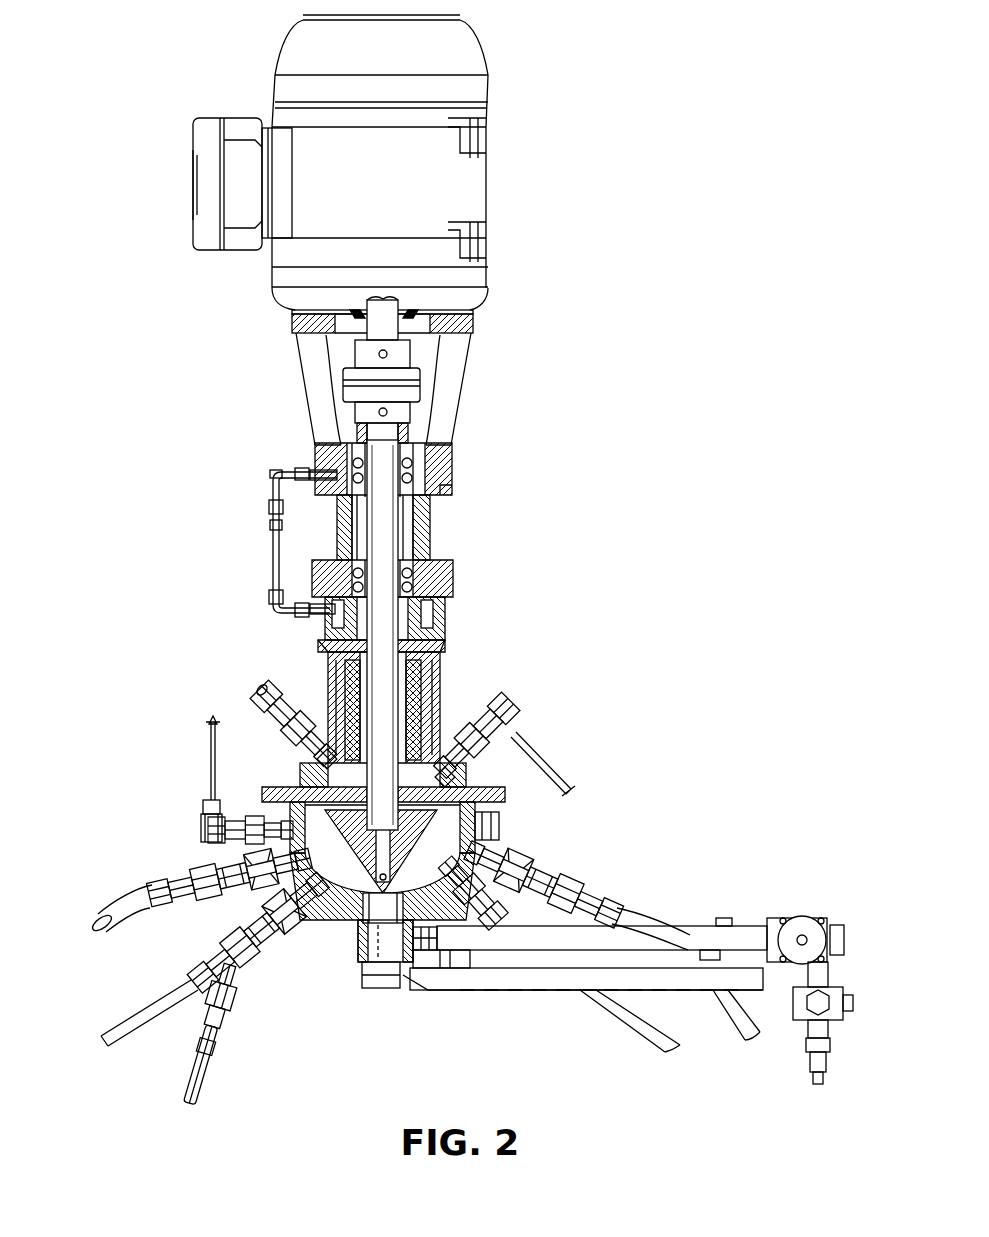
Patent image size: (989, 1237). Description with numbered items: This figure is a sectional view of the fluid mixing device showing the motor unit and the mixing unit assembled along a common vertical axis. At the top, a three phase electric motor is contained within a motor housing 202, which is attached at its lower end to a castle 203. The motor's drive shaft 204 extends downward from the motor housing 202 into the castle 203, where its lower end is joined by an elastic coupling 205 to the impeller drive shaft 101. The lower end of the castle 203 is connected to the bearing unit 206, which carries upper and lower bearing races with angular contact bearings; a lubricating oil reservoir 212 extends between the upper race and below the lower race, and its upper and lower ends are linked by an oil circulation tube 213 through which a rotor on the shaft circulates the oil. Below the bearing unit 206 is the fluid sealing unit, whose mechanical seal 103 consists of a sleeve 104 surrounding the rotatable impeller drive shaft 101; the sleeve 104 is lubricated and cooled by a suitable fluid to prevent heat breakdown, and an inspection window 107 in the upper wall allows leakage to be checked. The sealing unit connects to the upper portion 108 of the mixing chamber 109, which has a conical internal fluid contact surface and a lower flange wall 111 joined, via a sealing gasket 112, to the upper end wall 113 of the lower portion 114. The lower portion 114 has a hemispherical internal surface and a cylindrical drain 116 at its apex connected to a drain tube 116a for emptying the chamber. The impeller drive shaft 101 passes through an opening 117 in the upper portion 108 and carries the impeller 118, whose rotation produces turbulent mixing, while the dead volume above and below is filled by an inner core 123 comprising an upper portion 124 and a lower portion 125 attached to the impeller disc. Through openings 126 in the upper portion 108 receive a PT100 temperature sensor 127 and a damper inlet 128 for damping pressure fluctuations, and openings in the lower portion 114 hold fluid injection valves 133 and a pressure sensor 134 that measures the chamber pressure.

The motor housing 202 is at (475, 190).
The castle 203 is at (308, 417).
The drive shaft 204 is at (387, 328).
The elastic coupling 205 is at (410, 393).
The bearing unit 206 is at (452, 455).
The oil circulation tube 213 is at (273, 530).
The lubricating oil reservoir 212 is at (300, 612).
The impeller drive shaft 101 is at (384, 650).
The sleeve 104 is at (440, 650).
The inspection window 107 is at (325, 640).
The upper portion of mixing chamber 108 is at (330, 668).
The opening 117 is at (437, 690).
The mechanical seal 103 is at (445, 720).
The upper end wall 113 is at (266, 796).
The lower flange wall 111 is at (505, 797).
The mixing chamber 109 is at (348, 925).
The sealing gasket 112 is at (475, 822).
The lower portion of mixing chamber 114 is at (313, 923).
The cylindrical drain 116 is at (372, 965).
The drain tube 116a is at (490, 943).
The inner core 123 is at (393, 900).
The impeller 118 is at (499, 843).
The upper portion of inner core 124 is at (267, 790).
The lower portion of inner core 125 is at (267, 852).
The through openings 126 is at (303, 757).
The PT100 temperature sensor 127 is at (510, 722).
The damper inlet 128 is at (258, 686).
The fluid injection valves 133 is at (577, 874).
The pressure sensor 134 is at (203, 837).